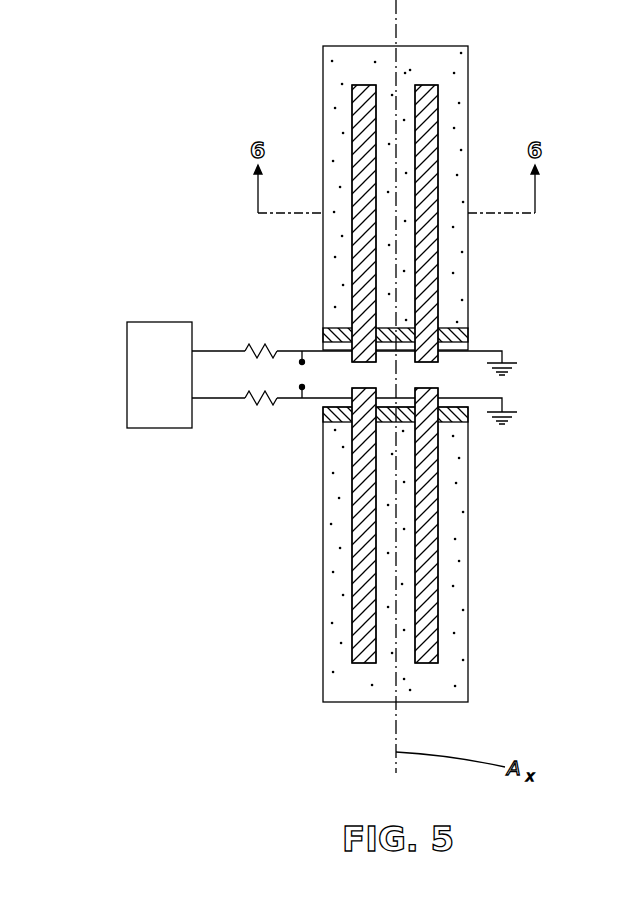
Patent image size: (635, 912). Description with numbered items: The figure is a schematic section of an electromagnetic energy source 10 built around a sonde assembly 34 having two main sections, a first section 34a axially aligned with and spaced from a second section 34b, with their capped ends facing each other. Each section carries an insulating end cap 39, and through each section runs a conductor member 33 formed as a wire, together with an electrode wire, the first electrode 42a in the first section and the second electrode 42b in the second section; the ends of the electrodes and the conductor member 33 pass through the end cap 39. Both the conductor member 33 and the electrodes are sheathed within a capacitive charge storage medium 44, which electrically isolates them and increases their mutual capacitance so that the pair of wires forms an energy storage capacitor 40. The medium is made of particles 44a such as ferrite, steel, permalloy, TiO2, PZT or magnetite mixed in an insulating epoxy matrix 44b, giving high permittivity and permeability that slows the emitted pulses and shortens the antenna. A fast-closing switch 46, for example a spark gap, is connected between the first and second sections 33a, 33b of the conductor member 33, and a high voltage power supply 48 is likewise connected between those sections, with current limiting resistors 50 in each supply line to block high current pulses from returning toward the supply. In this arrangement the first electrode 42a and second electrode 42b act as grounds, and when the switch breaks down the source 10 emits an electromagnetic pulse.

The electromagnetic energy source 10 is at (222, 146).
The conductor member 33 is at (396, 213).
The first section of conductor member 33a is at (374, 596).
The second section of conductor member 33b is at (352, 100).
The sonde assembly 34 is at (380, 204).
The first section 34a is at (506, 481).
The second section 34b is at (505, 131).
The end cap 39 is at (455, 335).
The energy storage capacitor 40 is at (389, 572).
The first electrode 42a is at (432, 577).
The second electrode 42b is at (440, 95).
The capacitive charge storage medium 44 is at (391, 572).
The particles 44a is at (337, 598).
The epoxy matrix 44b is at (385, 687).
The fast-closing switch 46 is at (300, 368).
The high voltage power supply 48 is at (127, 350).
The current limiting resistors 50 is at (255, 408).